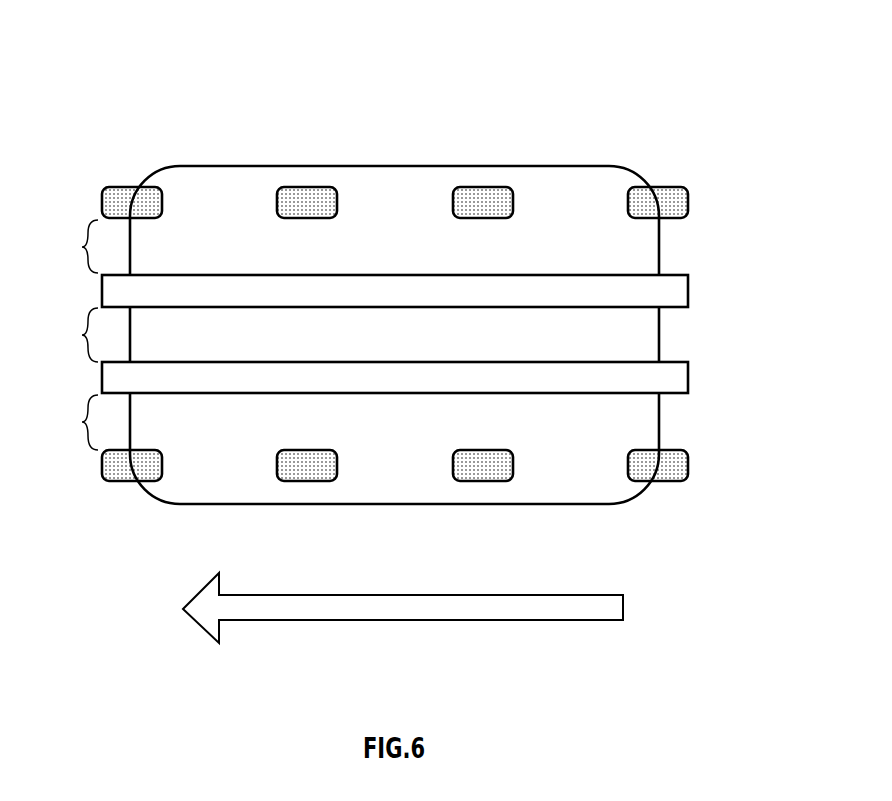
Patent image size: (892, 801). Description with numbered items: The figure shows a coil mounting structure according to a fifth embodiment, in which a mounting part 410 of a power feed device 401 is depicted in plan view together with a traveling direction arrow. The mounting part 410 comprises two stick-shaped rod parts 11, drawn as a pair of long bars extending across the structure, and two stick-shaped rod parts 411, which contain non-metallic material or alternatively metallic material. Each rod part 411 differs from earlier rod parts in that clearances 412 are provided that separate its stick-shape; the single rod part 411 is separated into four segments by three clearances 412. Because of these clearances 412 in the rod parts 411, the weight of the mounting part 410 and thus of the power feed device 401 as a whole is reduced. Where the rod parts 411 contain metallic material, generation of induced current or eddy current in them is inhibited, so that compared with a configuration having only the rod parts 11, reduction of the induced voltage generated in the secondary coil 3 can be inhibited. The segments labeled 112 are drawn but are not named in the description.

The power feed device 401 is at (121, 86).
The mounting part 410 is at (680, 160).
The rod part 411 is at (690, 200).
The clearance 412 is at (220, 198).
The rod part 11 is at (690, 288).
The secondary coil 3 is at (660, 332).
The section 112 is at (68, 335).